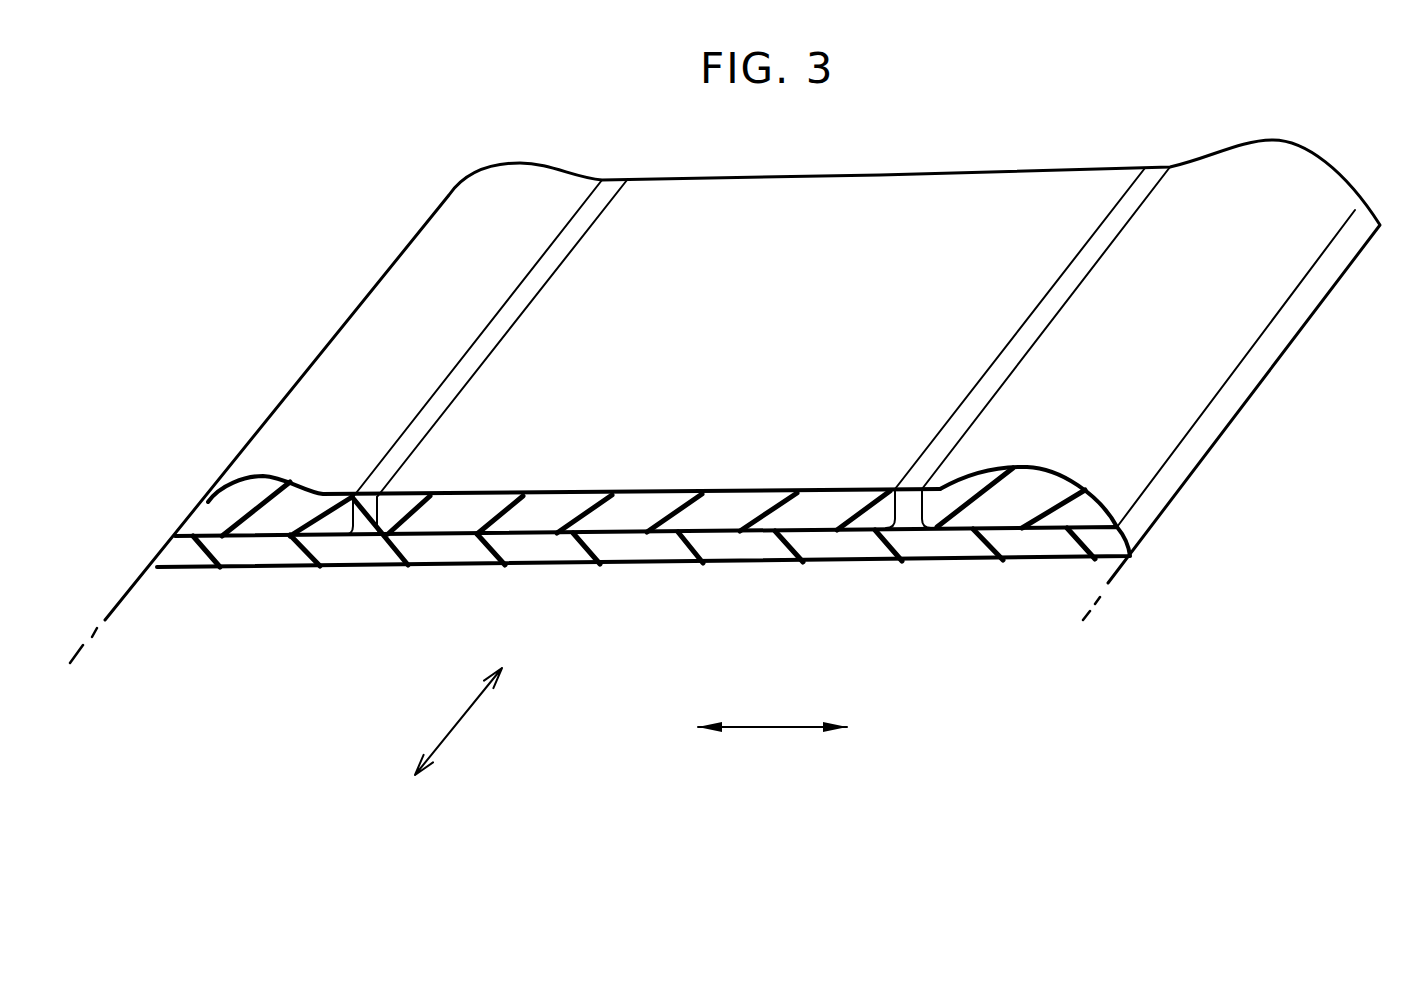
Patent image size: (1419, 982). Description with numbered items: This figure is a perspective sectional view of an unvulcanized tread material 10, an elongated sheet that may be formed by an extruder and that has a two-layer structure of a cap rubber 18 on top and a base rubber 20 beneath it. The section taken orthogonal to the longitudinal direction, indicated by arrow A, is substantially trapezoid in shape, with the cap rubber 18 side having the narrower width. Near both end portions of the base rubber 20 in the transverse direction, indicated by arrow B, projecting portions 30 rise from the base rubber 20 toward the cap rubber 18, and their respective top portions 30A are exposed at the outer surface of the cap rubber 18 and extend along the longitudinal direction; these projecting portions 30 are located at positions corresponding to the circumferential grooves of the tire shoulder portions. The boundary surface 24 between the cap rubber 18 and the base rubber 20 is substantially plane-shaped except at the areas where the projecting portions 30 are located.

The unvulcanized tread material 10 is at (1026, 394).
The cap rubber 18 is at (1083, 509).
The base rubber 20 is at (1111, 540).
The boundary surface 24 is at (1048, 527).
The projecting portion 30 is at (370, 508).
The top portion 30A is at (368, 490).
The arrow A is at (468, 712).
The arrow B is at (770, 727).